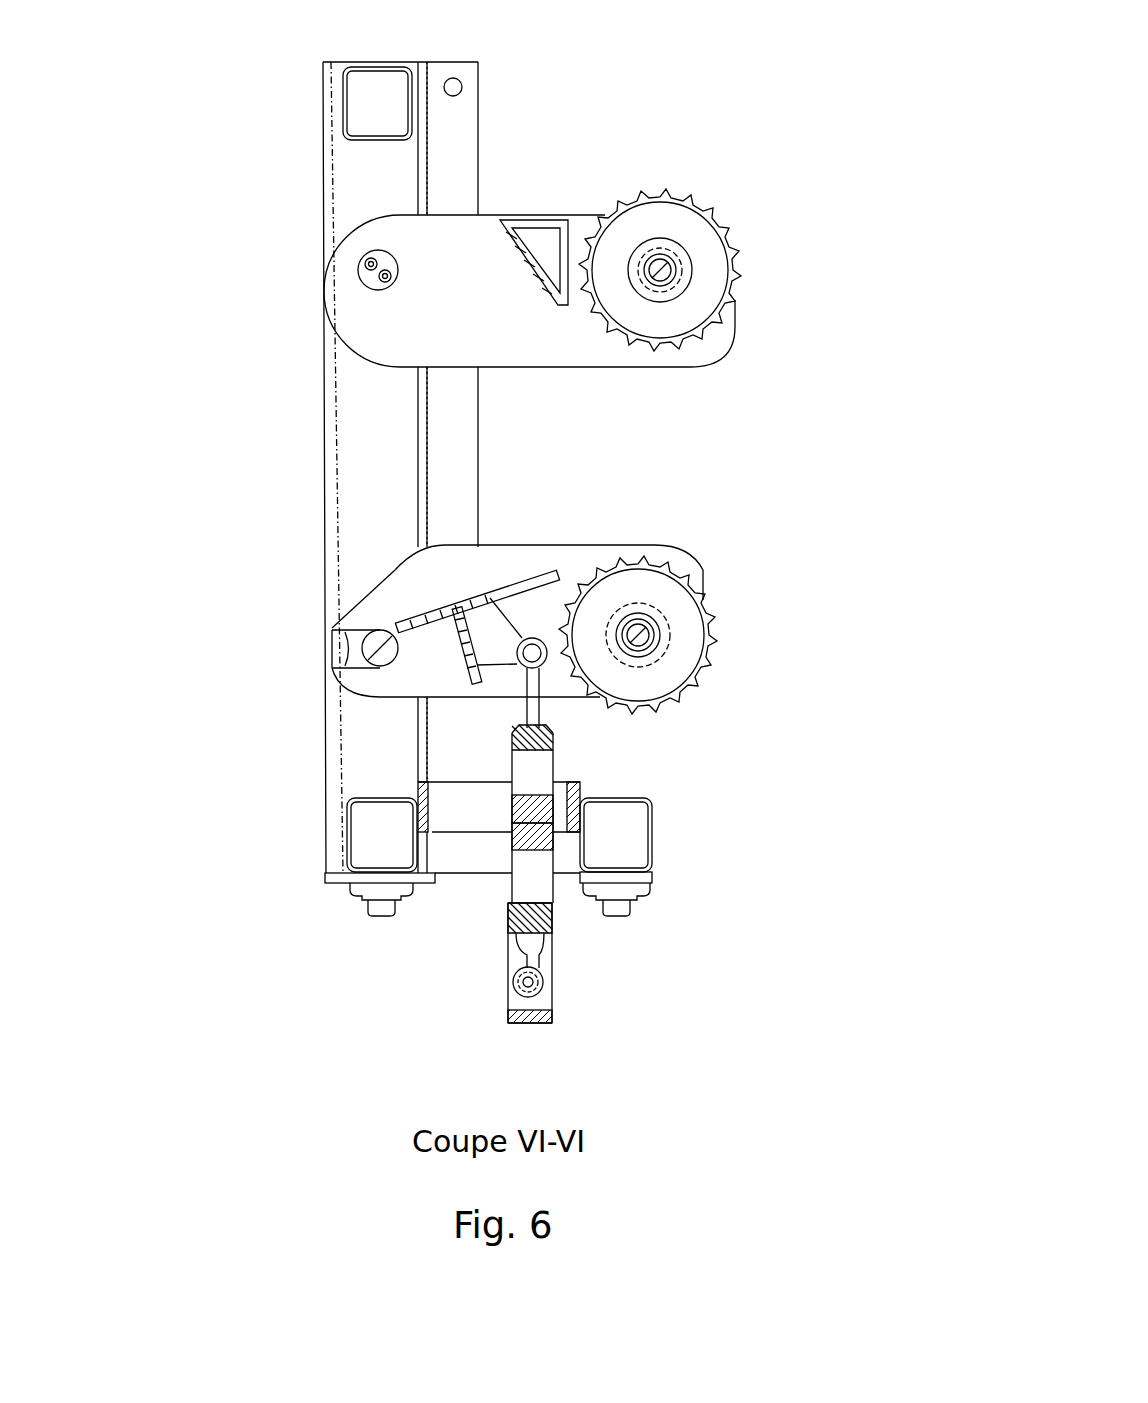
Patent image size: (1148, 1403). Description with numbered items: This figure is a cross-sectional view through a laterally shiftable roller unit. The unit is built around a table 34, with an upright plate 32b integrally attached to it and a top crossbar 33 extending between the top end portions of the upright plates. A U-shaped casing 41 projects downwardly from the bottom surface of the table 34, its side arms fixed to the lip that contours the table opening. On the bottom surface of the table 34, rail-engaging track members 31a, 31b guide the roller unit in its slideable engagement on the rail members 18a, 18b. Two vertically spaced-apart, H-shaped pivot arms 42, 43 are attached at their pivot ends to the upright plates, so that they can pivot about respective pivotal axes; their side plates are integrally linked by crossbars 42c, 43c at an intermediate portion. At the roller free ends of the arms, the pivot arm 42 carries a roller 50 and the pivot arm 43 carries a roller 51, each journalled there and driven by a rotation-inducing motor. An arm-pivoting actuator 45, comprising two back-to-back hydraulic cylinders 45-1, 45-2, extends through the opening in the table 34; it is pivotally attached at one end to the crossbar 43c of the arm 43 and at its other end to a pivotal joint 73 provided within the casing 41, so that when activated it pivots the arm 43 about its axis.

The top crossbar 33 is at (345, 88).
The crossbar 42c is at (538, 215).
The roller 50 is at (697, 205).
The pivot arm 42 is at (372, 333).
The upright plate 32b is at (355, 403).
The crossbar 43c is at (463, 600).
The pivot arm 43 is at (378, 598).
The roller 51 is at (714, 636).
The hydraulic cylinder 45-1 is at (540, 770).
The arm-pivoting actuator 45 is at (512, 817).
The table 34 is at (655, 835).
The rail-engaging track member 31b is at (353, 890).
The rail-engaging track member 31a is at (637, 890).
The rail member 18b is at (380, 912).
The rail member 18a is at (618, 915).
The pivotal joint 73 is at (527, 982).
The hydraulic cylinder 45-2 is at (533, 900).
The U-shaped casing 41 is at (535, 1023).